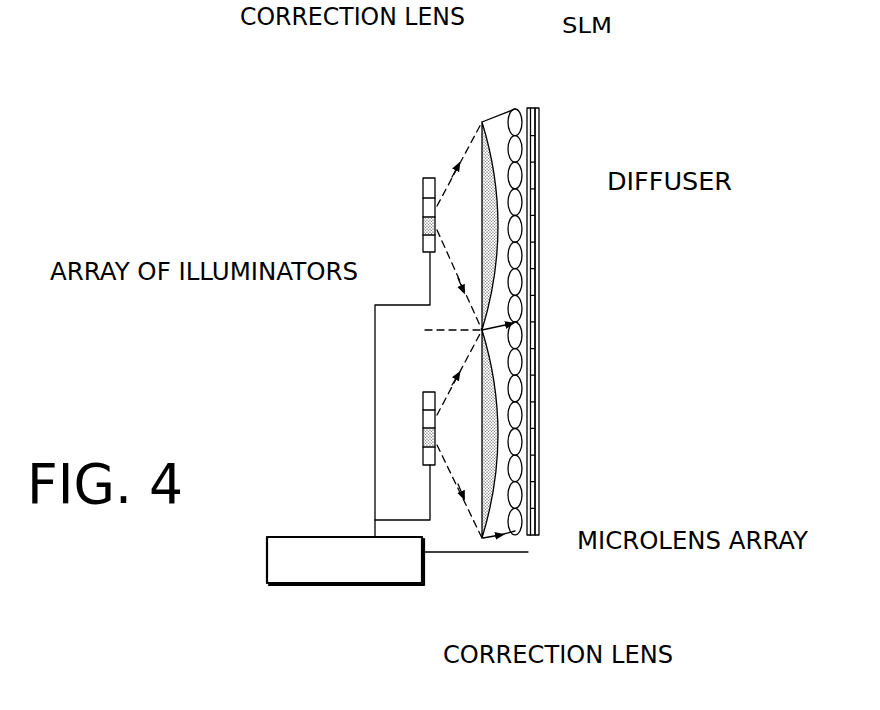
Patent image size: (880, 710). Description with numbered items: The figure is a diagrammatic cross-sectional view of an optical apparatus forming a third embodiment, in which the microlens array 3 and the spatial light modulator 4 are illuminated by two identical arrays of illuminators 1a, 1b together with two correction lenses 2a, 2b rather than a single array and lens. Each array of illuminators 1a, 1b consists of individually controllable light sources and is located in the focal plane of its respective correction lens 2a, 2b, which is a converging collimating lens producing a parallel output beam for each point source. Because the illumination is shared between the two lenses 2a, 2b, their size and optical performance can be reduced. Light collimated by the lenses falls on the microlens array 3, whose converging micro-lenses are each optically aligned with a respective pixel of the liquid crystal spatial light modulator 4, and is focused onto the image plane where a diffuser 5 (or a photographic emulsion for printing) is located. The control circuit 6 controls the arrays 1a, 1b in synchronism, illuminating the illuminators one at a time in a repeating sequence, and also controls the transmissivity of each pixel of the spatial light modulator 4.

The array of illuminators 1a is at (423, 210).
The array of illuminators 1b is at (423, 408).
The correction lens 2a is at (482, 122).
The correction lens 2b is at (483, 538).
The microlens array 3 is at (515, 531).
The spatial light modulator 4 is at (528, 108).
The diffuser 5 is at (540, 187).
The control circuit 6 is at (347, 583).